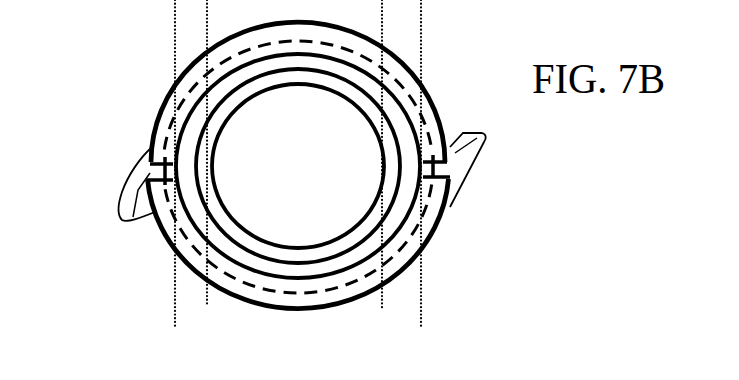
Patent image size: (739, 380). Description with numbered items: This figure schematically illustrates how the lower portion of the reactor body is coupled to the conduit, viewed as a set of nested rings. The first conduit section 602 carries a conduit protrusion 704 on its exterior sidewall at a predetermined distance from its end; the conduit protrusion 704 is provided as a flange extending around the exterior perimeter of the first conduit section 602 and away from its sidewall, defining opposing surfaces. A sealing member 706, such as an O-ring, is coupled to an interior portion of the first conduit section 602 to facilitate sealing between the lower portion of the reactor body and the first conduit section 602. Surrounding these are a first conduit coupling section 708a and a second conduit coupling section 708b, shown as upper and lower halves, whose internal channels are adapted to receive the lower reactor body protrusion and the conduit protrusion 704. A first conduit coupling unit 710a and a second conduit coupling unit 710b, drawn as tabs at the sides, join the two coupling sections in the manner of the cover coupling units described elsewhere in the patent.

The first conduit section 602 is at (258, 252).
The conduit protrusion 704 is at (213, 260).
The sealing member 706 is at (324, 241).
The first conduit coupling section 708a is at (441, 100).
The second conduit coupling section 708b is at (163, 239).
The first conduit coupling unit 710a is at (484, 152).
The second conduit coupling unit 710b is at (121, 178).